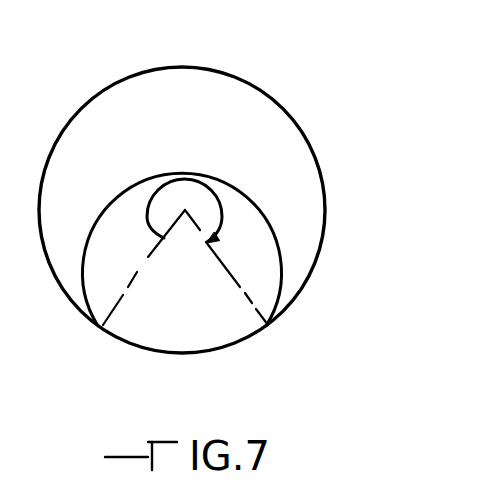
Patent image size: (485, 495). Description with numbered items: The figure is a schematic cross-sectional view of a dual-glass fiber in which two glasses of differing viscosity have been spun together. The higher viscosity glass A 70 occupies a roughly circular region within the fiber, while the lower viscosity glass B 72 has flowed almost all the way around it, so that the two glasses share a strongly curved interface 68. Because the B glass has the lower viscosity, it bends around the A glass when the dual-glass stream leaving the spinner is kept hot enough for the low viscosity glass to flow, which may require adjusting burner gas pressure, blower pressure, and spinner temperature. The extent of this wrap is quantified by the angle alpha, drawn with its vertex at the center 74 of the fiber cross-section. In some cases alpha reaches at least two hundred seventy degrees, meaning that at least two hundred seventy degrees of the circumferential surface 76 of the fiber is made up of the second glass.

The interface 68 is at (258, 199).
The glass A 70 is at (262, 260).
The glass B 72 is at (200, 123).
The center 74 is at (185, 211).
The circumferential surface 76 is at (216, 210).